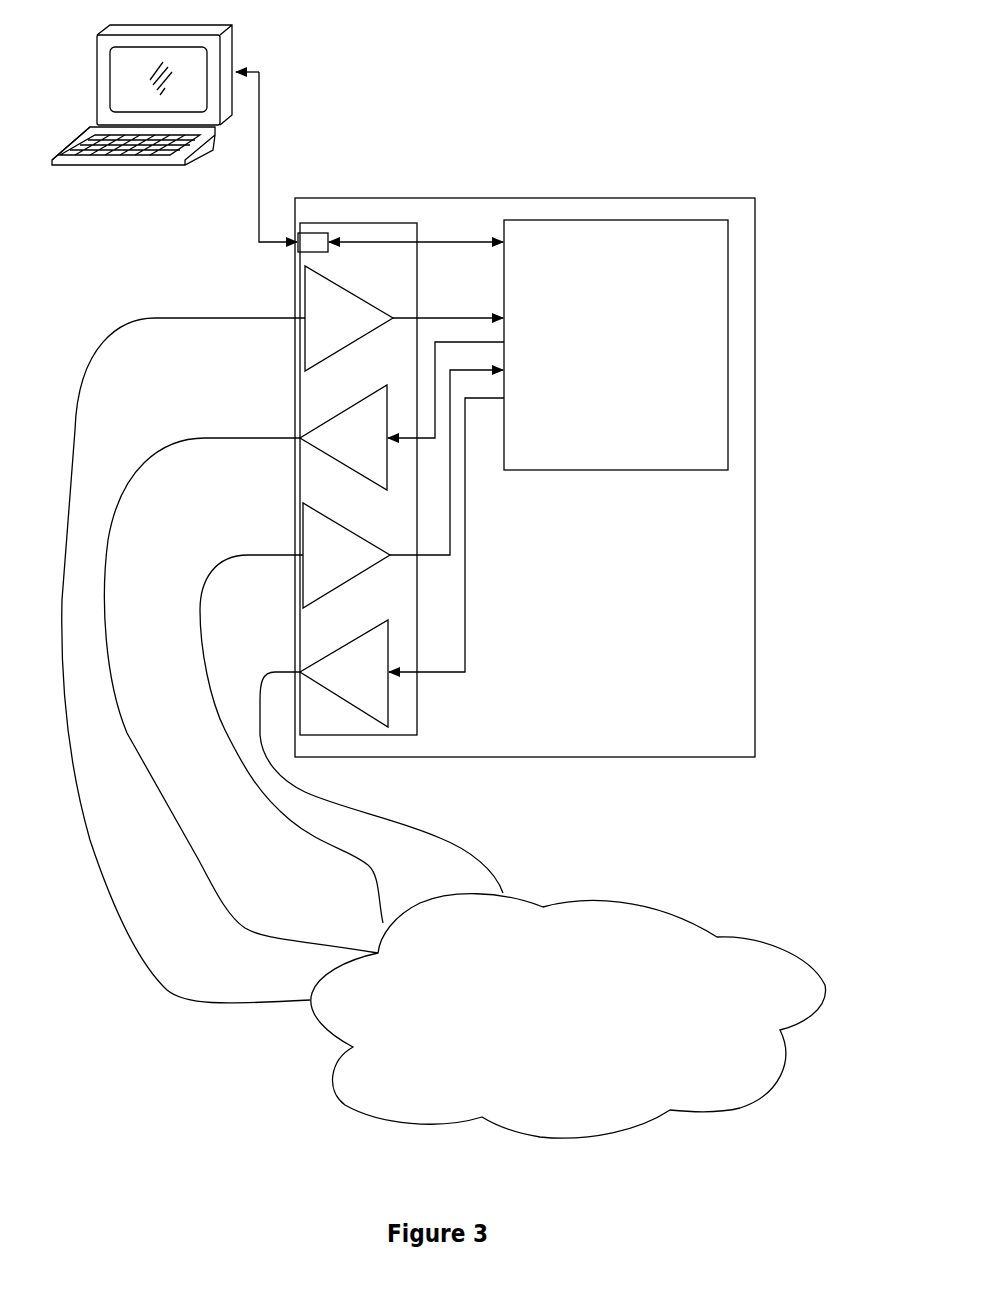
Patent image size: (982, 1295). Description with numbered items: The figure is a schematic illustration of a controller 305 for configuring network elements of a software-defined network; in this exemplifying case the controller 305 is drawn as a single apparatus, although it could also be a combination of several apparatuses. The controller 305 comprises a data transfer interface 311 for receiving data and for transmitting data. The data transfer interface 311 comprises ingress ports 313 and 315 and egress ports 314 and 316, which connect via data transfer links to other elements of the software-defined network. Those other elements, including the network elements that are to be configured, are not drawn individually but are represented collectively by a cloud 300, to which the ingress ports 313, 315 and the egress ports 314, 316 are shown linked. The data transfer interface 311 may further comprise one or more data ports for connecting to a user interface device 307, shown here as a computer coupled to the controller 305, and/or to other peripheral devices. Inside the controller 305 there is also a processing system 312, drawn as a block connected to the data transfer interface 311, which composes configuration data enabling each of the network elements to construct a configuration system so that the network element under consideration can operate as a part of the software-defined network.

The cloud 300 is at (564, 1019).
The controller 305 is at (681, 198).
The user interface device 307 is at (233, 48).
The data transfer interface 311 is at (417, 725).
The processing system 312 is at (636, 352).
The ingress port 313 is at (358, 330).
The egress port 314 is at (373, 450).
The ingress port 315 is at (357, 567).
The egress port 316 is at (374, 684).